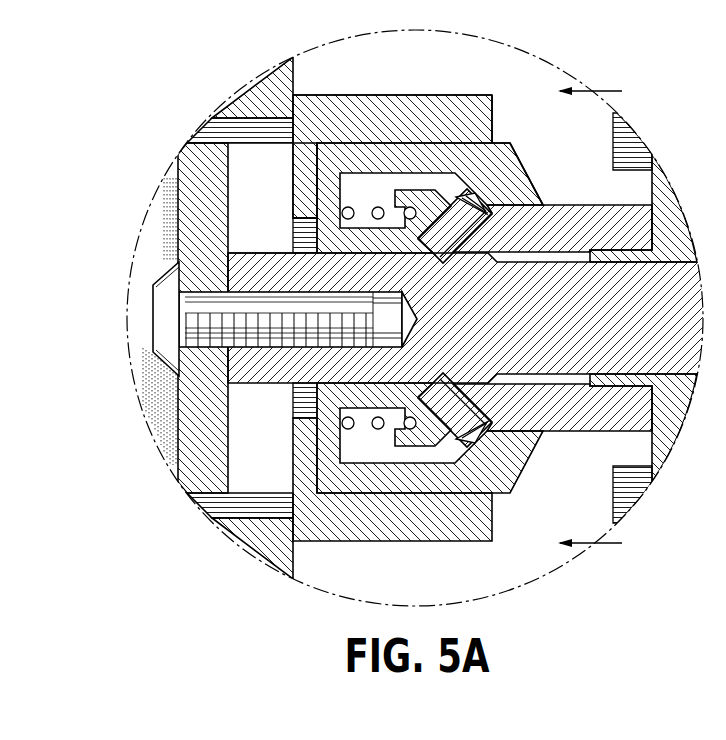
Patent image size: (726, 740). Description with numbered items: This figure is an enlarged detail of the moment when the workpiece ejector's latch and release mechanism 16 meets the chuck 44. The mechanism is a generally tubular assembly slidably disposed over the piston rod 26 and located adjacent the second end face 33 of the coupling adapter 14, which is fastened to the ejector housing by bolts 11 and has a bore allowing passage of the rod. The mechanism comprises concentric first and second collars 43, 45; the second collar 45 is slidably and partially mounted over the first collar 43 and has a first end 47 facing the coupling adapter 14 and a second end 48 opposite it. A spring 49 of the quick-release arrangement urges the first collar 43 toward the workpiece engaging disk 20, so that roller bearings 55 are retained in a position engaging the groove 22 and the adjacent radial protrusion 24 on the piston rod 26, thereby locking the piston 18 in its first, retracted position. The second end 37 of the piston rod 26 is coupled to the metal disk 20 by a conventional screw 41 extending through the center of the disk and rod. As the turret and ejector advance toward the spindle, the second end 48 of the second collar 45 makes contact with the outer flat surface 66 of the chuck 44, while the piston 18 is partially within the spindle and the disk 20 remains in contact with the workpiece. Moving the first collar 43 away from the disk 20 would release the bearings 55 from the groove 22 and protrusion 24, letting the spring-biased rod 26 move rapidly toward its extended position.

The bolts 11 is at (638, 140).
The coupling adapter 14 is at (684, 194).
The latch and release mechanism 16 is at (392, 88).
The piston 18 is at (270, 388).
The workpiece engaging disk 20 is at (178, 429).
The groove 22 is at (443, 470).
The radial protrusion 24 is at (495, 198).
The piston rod 26 is at (561, 380).
The second end face 33 is at (651, 187).
The second end 37 is at (251, 252).
The screw 41 is at (152, 317).
The first collar 43 is at (417, 150).
The chuck 44 is at (297, 558).
The second collar 45 is at (341, 96).
The first end 47 is at (494, 118).
The second end 48 is at (292, 152).
The spring 49 is at (373, 447).
The roller bearings 55 is at (460, 225).
The outer flat surface 66 is at (301, 58).